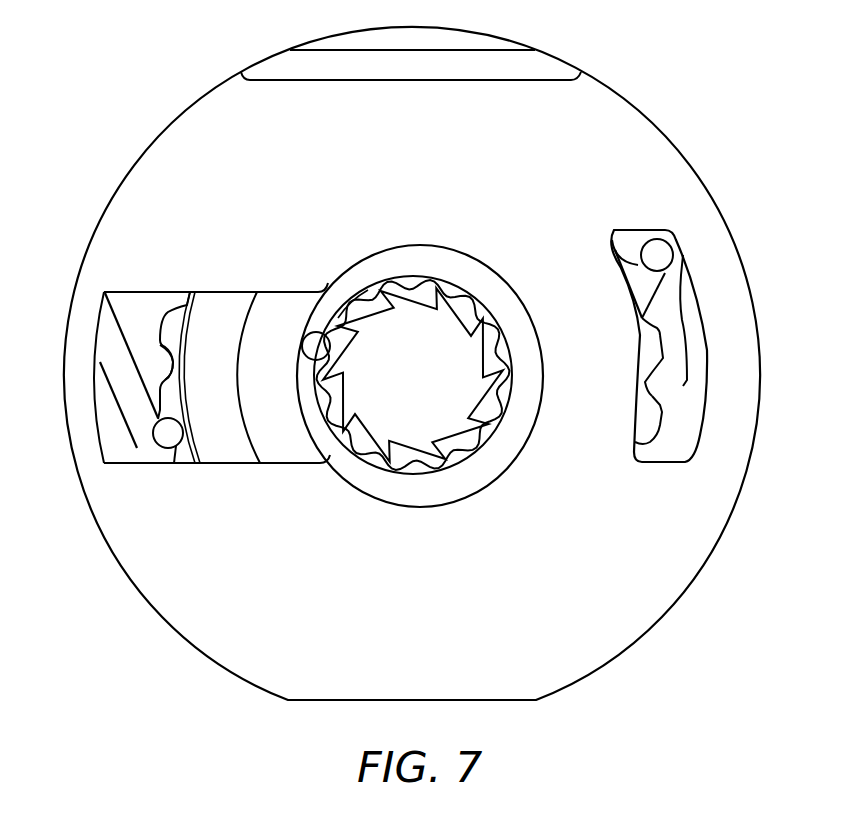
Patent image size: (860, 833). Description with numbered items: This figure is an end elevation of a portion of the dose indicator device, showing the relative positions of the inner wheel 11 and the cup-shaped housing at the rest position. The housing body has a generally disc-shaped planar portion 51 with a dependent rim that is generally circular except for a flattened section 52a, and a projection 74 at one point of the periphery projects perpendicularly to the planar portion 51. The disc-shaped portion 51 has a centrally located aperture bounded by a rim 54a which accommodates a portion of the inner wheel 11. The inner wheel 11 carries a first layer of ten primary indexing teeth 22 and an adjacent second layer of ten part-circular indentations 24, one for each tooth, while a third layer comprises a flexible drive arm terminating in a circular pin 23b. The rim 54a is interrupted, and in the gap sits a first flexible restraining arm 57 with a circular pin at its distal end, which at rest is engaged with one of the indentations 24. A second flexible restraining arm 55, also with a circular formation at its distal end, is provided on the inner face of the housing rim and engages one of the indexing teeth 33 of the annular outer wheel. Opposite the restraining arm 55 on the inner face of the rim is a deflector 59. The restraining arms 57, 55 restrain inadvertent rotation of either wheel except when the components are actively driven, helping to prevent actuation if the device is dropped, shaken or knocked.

The inner wheel 11 is at (413, 375).
The primary indexing teeth 22 is at (403, 285).
The circular pin 23b is at (660, 255).
The indentations 24 is at (357, 302).
The indexing teeth 33 is at (163, 365).
The disc-shaped planar portion 51 is at (652, 136).
The flattened section 52a is at (313, 704).
The rim 54a is at (484, 470).
The second flexible restraining arm 55 is at (140, 432).
The first flexible restraining arm 57 is at (315, 338).
The deflector 59 is at (687, 350).
The projection 74 is at (545, 58).